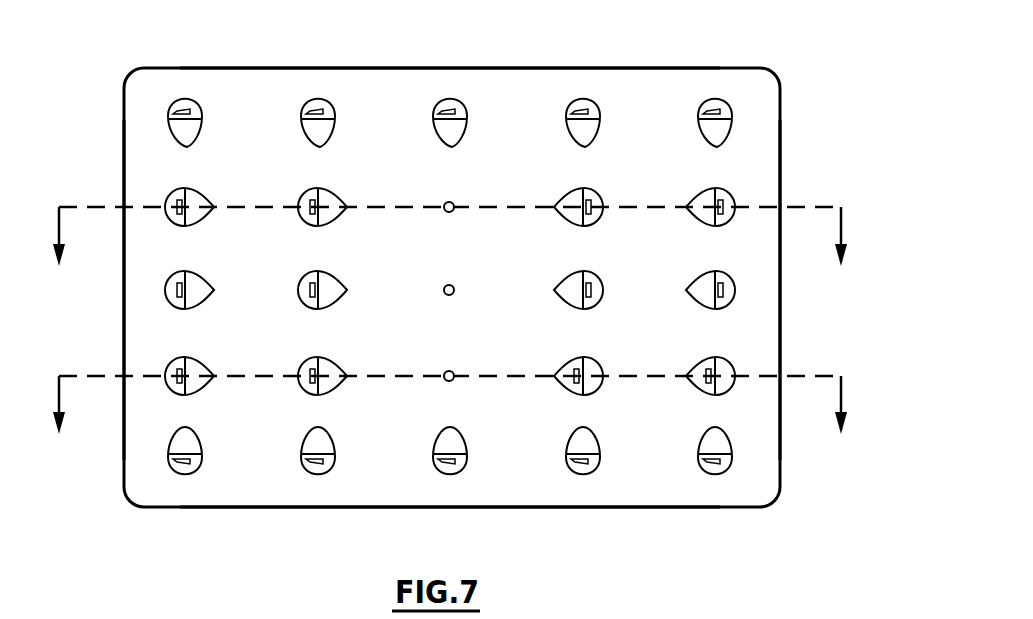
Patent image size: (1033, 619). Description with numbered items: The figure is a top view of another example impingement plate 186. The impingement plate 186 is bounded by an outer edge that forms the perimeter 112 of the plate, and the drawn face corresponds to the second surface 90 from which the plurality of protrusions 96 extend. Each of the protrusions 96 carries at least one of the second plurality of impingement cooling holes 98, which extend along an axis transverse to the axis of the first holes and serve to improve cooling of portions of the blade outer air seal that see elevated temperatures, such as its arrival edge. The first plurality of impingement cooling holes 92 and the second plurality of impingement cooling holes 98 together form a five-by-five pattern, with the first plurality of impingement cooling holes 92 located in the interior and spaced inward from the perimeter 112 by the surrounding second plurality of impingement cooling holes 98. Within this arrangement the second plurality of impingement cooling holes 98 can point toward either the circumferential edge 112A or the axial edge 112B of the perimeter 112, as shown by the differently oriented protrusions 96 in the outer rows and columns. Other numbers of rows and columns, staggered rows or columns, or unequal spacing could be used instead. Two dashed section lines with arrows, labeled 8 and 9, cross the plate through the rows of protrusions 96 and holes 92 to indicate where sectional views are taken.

The impingement plate 186 is at (802, 52).
The second surface 90 is at (680, 90).
The perimeter 112 is at (780, 320).
The circumferential edge 112A is at (124, 320).
The axial edge 112B is at (493, 68).
The protrusions 96 is at (190, 120).
The second plurality of impingement cooling holes 98 is at (183, 110).
The first plurality of impingement cooling holes 92 is at (449, 212).
The section line 8- 8 is at (450, 249).
The section line 9- 9 is at (450, 421).